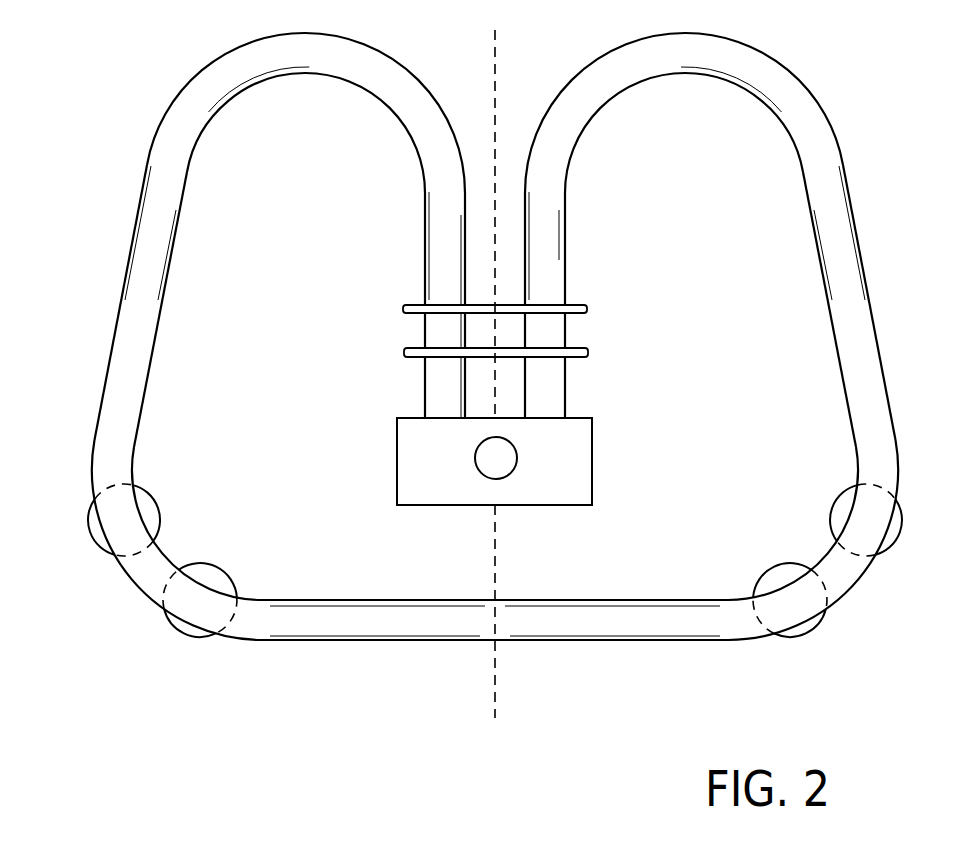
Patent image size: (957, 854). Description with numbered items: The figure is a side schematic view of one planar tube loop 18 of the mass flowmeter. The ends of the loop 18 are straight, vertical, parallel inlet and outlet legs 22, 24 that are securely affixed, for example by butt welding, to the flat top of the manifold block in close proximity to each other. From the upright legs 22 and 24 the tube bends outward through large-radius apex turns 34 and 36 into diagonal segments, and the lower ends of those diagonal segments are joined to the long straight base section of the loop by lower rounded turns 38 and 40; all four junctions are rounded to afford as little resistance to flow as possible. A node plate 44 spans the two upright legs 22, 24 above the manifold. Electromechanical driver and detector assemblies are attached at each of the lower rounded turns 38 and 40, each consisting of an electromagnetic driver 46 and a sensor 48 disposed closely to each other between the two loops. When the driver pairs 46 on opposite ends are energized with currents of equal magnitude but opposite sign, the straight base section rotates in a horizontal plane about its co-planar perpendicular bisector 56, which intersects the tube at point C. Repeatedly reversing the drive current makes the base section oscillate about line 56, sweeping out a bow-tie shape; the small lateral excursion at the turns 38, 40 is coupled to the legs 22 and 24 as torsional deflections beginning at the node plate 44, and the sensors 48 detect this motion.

The loop 18 is at (336, 646).
The inlet leg 22 is at (433, 388).
The outlet leg 24 is at (565, 397).
The apex turn 34 is at (351, 52).
The apex turn 36 is at (735, 55).
The lower rounded turn 38 is at (141, 590).
The lower rounded turn 40 is at (840, 583).
The node plate 44 is at (414, 304).
The electromagnetic driver 46 is at (90, 530).
The sensor 48 is at (169, 622).
The perpendicular bisector 56 is at (497, 60).
The point c C is at (494, 600).